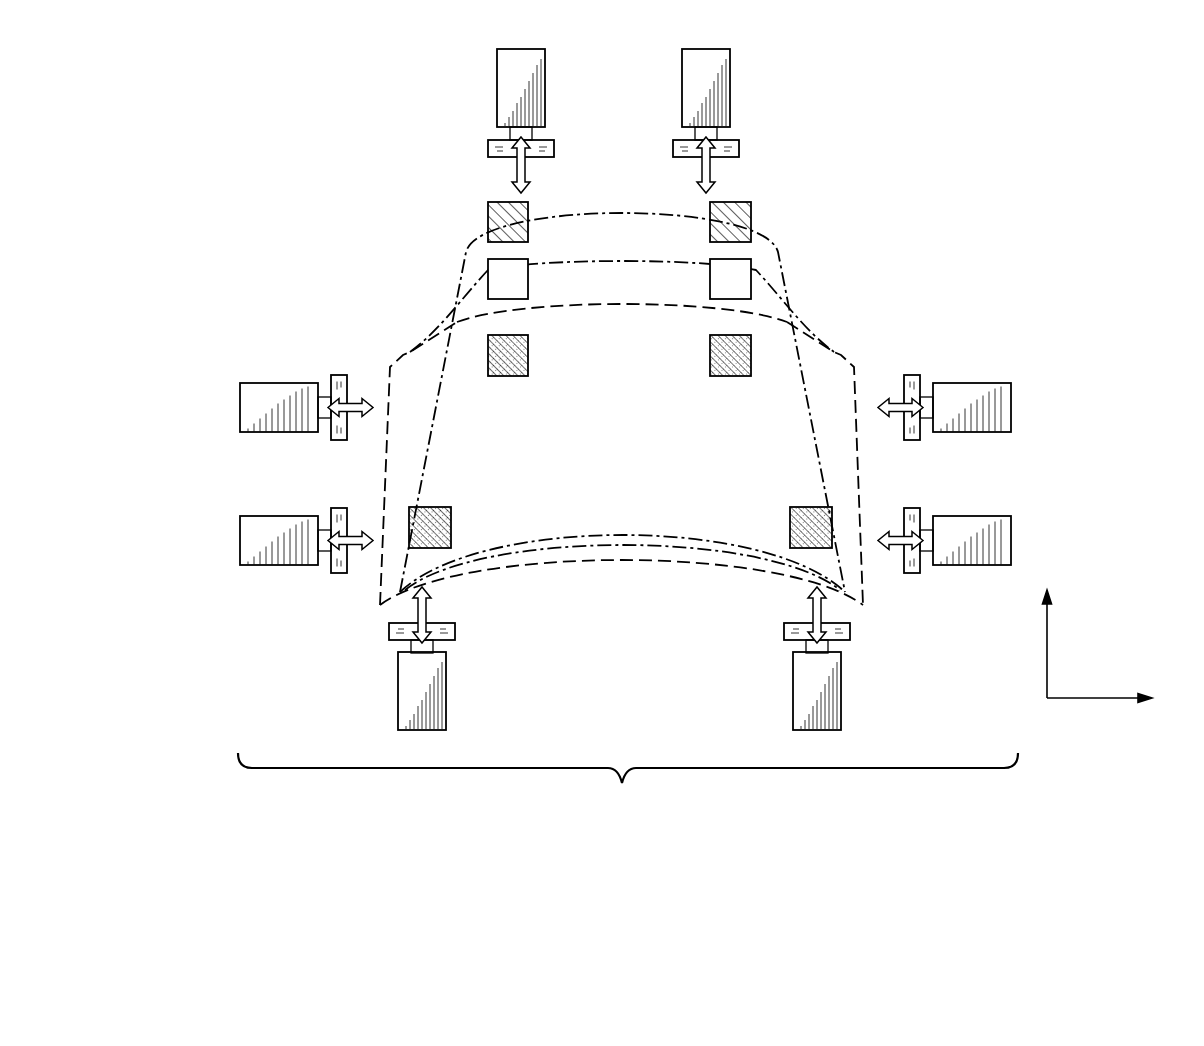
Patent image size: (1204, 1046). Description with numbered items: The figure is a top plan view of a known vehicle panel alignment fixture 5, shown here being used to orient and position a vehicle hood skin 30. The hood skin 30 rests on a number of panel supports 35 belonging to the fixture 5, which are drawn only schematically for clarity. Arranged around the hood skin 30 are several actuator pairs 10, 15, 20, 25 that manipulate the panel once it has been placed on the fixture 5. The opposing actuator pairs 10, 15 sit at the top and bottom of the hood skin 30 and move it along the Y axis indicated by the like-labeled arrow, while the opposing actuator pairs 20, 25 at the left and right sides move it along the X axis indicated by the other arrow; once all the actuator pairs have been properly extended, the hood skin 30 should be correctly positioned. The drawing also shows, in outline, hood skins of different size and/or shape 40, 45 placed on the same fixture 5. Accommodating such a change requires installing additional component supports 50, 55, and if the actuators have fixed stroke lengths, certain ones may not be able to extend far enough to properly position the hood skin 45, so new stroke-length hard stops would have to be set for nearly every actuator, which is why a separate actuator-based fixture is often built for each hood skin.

The vehicle panel alignment fixture 5 is at (1024, 176).
The actuator pair 10 is at (470, 69).
The actuator pair 15 is at (370, 689).
The actuator pair 20 is at (224, 362).
The actuator pair 25 is at (1025, 362).
The vehicle hood skin 30 is at (388, 392).
The panel supports 35 is at (451, 530).
The hood skin of different size and/or shape 40 is at (776, 303).
The hood skin of different size and/or shape 45 is at (598, 214).
The additional component support 50 is at (490, 272).
The additional component support 55 is at (748, 203).